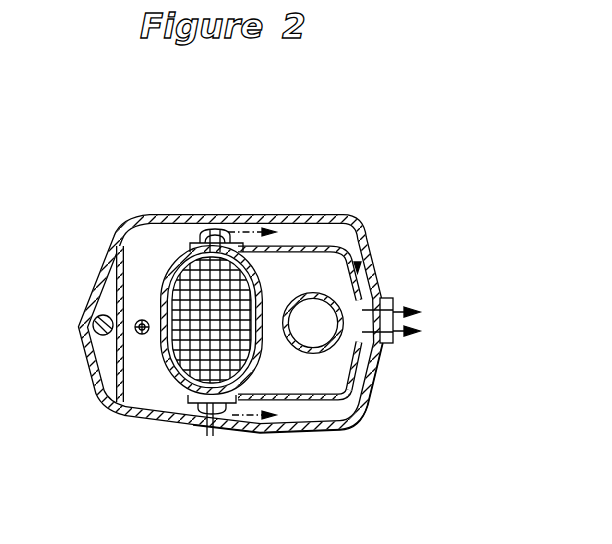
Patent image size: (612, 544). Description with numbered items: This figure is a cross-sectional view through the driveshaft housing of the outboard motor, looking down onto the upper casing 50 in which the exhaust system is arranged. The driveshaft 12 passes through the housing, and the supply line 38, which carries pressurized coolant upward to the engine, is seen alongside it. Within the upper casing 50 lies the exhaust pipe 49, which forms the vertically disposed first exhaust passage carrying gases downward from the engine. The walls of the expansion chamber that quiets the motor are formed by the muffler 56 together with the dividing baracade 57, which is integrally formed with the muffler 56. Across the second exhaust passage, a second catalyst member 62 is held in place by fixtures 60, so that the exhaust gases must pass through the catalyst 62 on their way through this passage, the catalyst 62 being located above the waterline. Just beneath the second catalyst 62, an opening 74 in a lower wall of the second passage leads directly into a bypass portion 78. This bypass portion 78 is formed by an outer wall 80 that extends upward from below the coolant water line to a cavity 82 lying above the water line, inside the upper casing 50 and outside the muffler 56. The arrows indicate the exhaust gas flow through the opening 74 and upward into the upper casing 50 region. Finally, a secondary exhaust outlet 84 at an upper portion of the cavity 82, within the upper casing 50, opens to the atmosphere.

The driveshaft 12 is at (96, 334).
The supply line 38 is at (142, 335).
The exhaust pipe 49 is at (332, 306).
The upper casing 50 is at (266, 435).
The muffler 56 is at (312, 412).
The dividing baracade 57 is at (257, 353).
The fixtures 60 is at (170, 225).
The second catalyst member 62 is at (185, 295).
The opening 74 is at (212, 245).
The bypass portion 78 is at (203, 247).
The outer wall 80 is at (230, 230).
The cavity 82 is at (352, 428).
The secondary exhaust outlet 84 is at (420, 330).